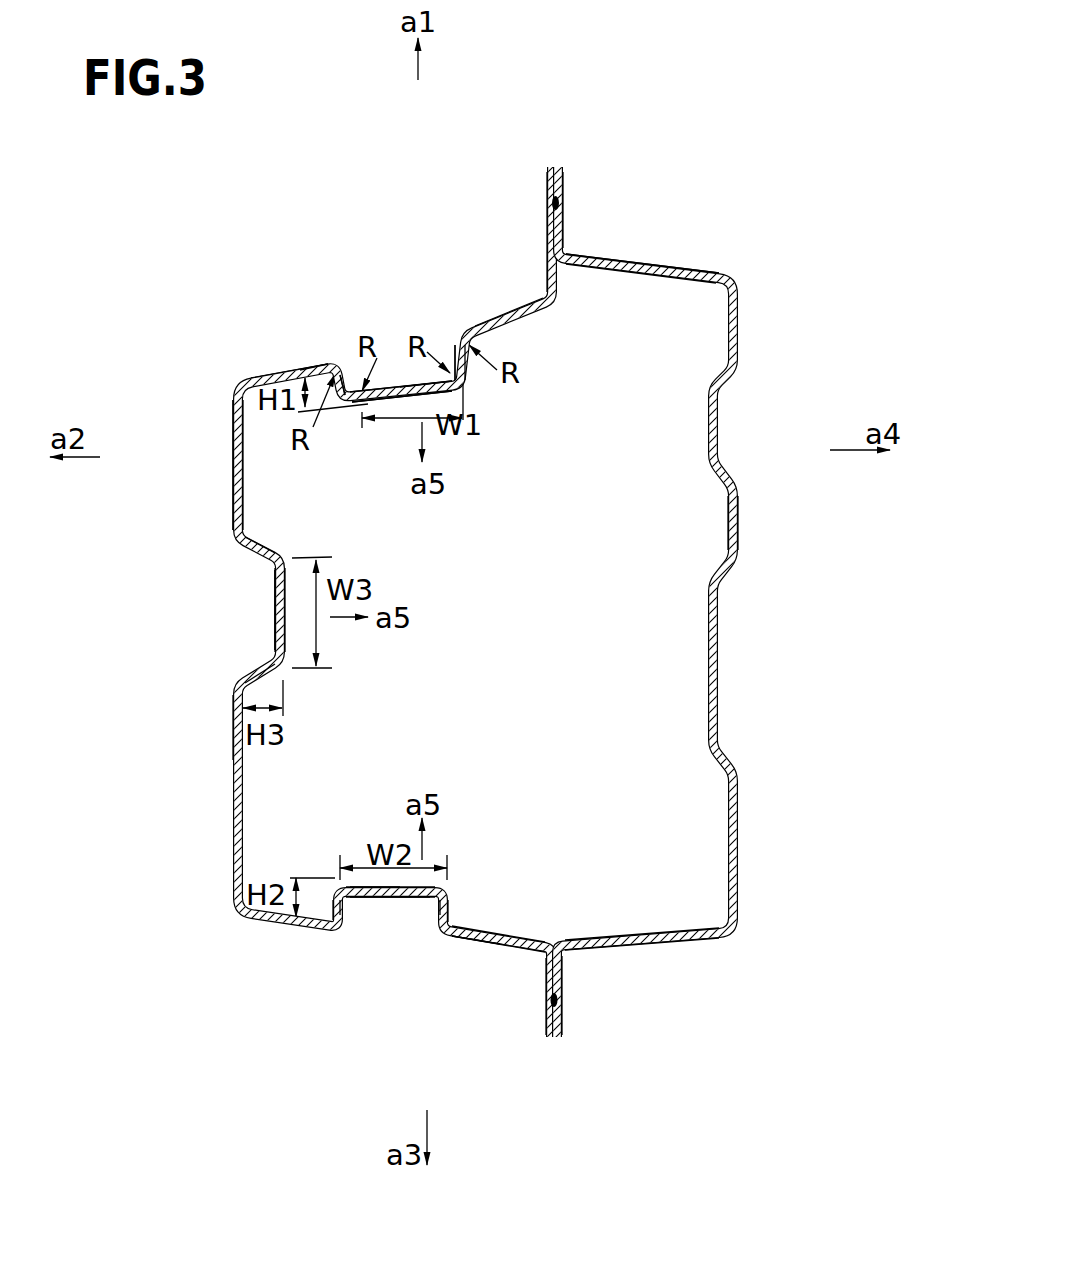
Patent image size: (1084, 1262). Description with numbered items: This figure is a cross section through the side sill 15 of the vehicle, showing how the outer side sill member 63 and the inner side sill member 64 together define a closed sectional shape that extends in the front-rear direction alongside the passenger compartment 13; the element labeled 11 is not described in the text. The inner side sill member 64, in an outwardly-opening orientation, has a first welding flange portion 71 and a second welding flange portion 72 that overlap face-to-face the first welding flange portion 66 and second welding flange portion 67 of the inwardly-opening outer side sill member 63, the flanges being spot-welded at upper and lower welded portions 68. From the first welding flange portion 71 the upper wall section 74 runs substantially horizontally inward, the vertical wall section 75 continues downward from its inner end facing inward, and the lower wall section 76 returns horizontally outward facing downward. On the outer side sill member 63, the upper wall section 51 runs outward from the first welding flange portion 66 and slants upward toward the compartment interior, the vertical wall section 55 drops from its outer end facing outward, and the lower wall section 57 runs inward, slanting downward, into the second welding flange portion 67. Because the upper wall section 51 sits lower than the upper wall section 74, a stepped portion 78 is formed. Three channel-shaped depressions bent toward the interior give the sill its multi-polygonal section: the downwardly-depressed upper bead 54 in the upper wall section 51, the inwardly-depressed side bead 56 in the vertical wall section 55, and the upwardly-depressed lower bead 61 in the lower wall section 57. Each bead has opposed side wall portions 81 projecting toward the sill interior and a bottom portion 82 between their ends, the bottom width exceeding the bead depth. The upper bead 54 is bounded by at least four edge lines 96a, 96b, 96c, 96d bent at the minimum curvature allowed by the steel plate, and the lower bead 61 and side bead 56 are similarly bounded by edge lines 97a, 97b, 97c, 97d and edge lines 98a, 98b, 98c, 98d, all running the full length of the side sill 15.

The vehicle body frame member 11 is at (320, 128).
The passenger compartment 13 is at (845, 86).
The side sill 15 is at (255, 263).
The upper wall section 51 is at (467, 330).
The upper bead 54 is at (364, 392).
The vertical wall section 55 is at (229, 497).
The side bead 56 is at (273, 590).
The lower wall section 57 is at (468, 945).
The lower bead 61 is at (355, 897).
The outer side sill member 63 is at (225, 362).
The inner side sill member 64 is at (748, 262).
The first welding flange portion 66 is at (550, 240).
The second welding flange portion 67 is at (544, 988).
The welded portion 68 is at (552, 203).
The first welding flange portion 71 is at (566, 226).
The second welding flange portion 72 is at (565, 978).
The upper wall section 74 is at (665, 265).
The vertical wall section 75 is at (740, 532).
The lower wall section 76 is at (683, 947).
The stepped portion 78 is at (545, 292).
The side wall portions 81 is at (352, 392).
The bottom portion 82 is at (390, 392).
The edge line 96a is at (457, 345).
The edge line 96b is at (461, 385).
The edge line 96c is at (355, 400).
The edge line 96d is at (333, 362).
The edge line 97a is at (340, 925).
The edge line 97b is at (340, 888).
The edge line 97c is at (445, 892).
The edge line 97d is at (447, 935).
The edge line 98a is at (237, 548).
The edge line 98b is at (265, 553).
The edge line 98c is at (284, 668).
The edge line 98d is at (237, 680).